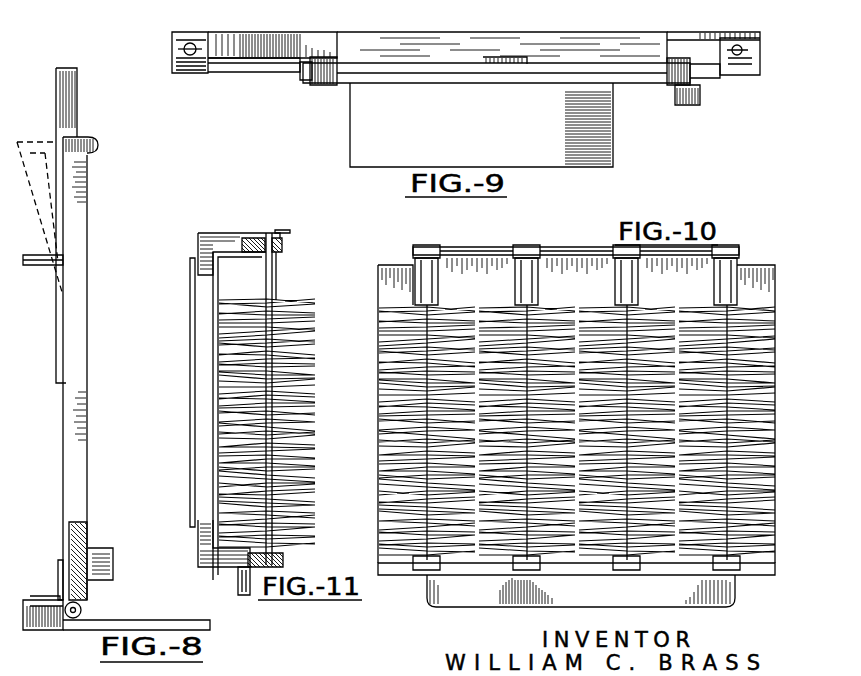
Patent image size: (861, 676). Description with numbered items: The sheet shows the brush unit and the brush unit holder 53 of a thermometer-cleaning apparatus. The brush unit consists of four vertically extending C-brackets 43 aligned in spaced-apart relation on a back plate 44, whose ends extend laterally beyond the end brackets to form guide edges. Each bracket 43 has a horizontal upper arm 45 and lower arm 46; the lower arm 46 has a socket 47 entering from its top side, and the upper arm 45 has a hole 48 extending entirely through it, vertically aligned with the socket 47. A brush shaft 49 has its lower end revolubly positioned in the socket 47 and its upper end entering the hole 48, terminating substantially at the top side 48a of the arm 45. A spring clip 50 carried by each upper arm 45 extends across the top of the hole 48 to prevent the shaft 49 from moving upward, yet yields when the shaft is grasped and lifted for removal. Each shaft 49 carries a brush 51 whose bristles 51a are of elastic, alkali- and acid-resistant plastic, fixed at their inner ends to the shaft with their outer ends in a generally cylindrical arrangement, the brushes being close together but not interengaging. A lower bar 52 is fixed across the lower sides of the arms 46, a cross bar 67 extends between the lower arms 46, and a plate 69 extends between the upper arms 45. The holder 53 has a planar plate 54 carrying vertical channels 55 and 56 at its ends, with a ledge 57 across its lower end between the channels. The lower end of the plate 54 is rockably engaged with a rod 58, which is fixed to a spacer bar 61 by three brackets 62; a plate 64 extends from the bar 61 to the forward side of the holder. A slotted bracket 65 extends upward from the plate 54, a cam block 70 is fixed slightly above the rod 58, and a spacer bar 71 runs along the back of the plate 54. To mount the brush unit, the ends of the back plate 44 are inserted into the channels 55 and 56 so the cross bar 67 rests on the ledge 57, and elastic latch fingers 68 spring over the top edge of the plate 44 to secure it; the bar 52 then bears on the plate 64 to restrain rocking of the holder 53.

In FIG. 11, the C-bracket 43 is at (204, 326).
In FIG. 10, the C-bracket 43 is at (416, 282).
In FIG. 11, the back plate 44 is at (190, 424).
In FIG. 10, the back plate 44 is at (758, 294).
In FIG. 11, the upper arm 45 is at (234, 243).
In FIG. 10, the upper arm 45 is at (418, 253).
In FIG. 11, the lower arm 46 is at (226, 562).
In FIG. 10, the lower arm 46 is at (424, 566).
In FIG. 11, the socket 47 is at (290, 562).
In FIG. 11, the hole 48 is at (284, 247).
In FIG. 11, the top side of the arm 48a is at (284, 233).
In FIG. 11, the brush shaft 49 is at (273, 283).
In FIG. 11, the clip 50 is at (258, 238).
In FIG. 10, the clip 50 is at (438, 236).
In FIG. 11, the brush 51 is at (312, 468).
In FIG. 10, the brush 51 is at (577, 431).
In FIG. 11, the bristles 51a is at (304, 356).
In FIG. 11, the lower bar 52 is at (240, 595).
In FIG. 10, the lower bar 52 is at (720, 601).
In FIG. 8, the brush unit holder 53 is at (64, 452).
In FIG. 9, the brush unit holder 53 is at (438, 60).
In FIG. 8, the planar plate 54 is at (75, 576).
In FIG. 9, the planar plate 54 is at (573, 62).
In FIG. 8, the channel 55 is at (87, 420).
In FIG. 9, the channel 55 is at (304, 81).
In FIG. 9, the channel 56 is at (705, 79).
In FIG. 9, the ledge 57 is at (358, 78).
In FIG. 8, the rod 58 is at (81, 609).
In FIG. 9, the rod 58 is at (236, 73).
In FIG. 8, the spacer bar 61 is at (51, 631).
In FIG. 9, the spacer bar 61 is at (311, 40).
In FIG. 9, the bracket 62 is at (197, 74).
In FIG. 8, the plate 64 is at (157, 619).
In FIG. 9, the plate 64 is at (386, 147).
In FIG. 8, the bracket 65 is at (57, 91).
In FIG. 9, the bracket 65 is at (492, 56).
In FIG. 10, the cross bar 67 is at (460, 577).
In FIG. 8, the latch finger 68 is at (86, 142).
In FIG. 9, the latch finger 68 is at (326, 87).
In FIG. 10, the plate 69 is at (479, 247).
In FIG. 8, the cam block 70 is at (107, 555).
In FIG. 9, the cam block 70 is at (688, 106).
In FIG. 8, the spacer bar 71 is at (40, 256).